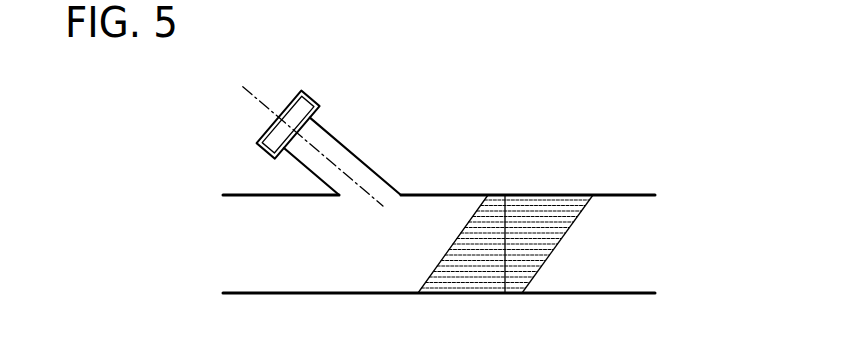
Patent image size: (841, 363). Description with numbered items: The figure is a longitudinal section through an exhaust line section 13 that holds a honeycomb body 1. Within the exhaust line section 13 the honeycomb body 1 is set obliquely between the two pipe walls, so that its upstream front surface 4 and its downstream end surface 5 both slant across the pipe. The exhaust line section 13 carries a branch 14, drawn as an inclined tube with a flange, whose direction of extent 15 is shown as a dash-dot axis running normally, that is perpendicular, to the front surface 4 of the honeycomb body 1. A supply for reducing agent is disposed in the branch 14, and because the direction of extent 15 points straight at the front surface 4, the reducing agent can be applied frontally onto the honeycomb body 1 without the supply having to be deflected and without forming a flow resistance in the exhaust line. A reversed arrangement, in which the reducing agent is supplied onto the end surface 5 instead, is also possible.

The honeycomb body 1 is at (563, 194).
The front surface 4 is at (475, 210).
The end surface 5 is at (532, 278).
The exhaust line section 13 is at (645, 294).
The branch 14 is at (343, 142).
The direction of extent 15 is at (252, 97).